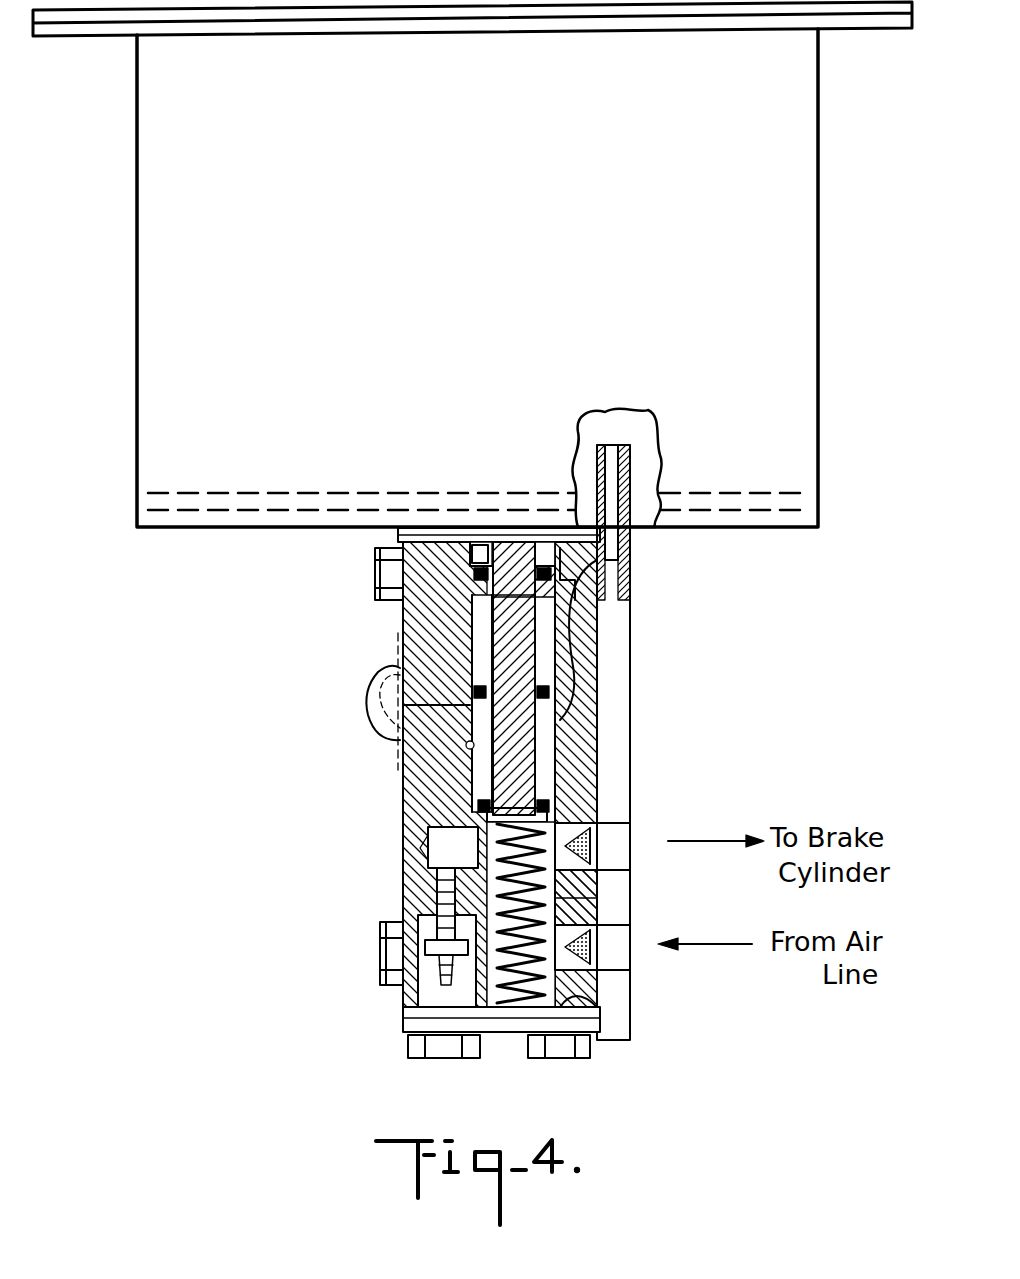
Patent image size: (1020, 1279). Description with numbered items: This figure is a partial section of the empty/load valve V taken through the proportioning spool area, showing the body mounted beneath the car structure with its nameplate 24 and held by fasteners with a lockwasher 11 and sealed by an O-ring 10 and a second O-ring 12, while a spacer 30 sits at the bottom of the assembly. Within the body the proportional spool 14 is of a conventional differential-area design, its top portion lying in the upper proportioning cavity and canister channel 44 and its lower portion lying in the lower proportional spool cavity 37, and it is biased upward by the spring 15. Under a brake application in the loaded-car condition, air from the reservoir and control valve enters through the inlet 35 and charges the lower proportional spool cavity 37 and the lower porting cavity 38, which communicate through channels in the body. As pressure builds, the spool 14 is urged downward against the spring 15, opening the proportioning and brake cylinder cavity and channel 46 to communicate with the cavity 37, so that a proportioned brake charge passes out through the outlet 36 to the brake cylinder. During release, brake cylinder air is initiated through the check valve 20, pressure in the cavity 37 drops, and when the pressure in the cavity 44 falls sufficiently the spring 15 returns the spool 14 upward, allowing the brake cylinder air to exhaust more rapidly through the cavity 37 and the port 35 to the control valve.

The O-ring 10 is at (470, 587).
The lockwasher 11 is at (398, 548).
The O-ring 12 is at (488, 700).
The proportional spool 14 is at (540, 745).
The spring 15 is at (490, 832).
The check valve 20 is at (445, 968).
The nameplate 24 is at (315, 513).
The spacer 30 is at (530, 1010).
The air inlet/outlet from ABDW valve 35 is at (623, 957).
The air outlet to brake cylinder 36 is at (612, 828).
The lower proportional spool cavity 37 is at (632, 893).
The lower porting cavity 38 is at (428, 997).
The upper proportioning cavity and canister channel 44 is at (487, 543).
The proportioning and brake cylinder cavity and channel 46 is at (540, 727).
The valve V is at (660, 640).